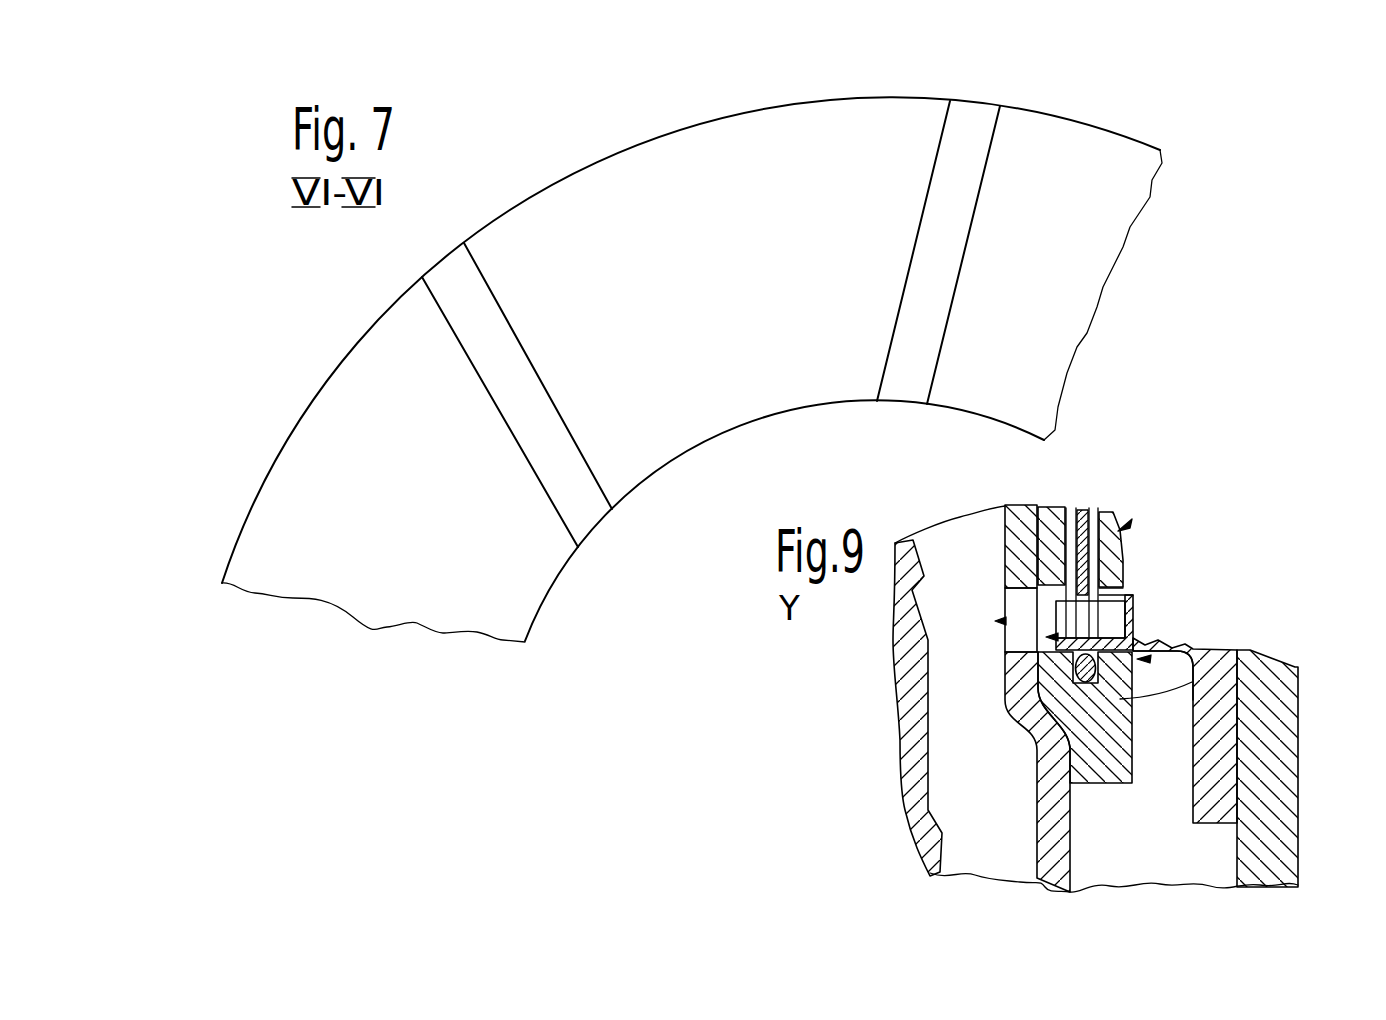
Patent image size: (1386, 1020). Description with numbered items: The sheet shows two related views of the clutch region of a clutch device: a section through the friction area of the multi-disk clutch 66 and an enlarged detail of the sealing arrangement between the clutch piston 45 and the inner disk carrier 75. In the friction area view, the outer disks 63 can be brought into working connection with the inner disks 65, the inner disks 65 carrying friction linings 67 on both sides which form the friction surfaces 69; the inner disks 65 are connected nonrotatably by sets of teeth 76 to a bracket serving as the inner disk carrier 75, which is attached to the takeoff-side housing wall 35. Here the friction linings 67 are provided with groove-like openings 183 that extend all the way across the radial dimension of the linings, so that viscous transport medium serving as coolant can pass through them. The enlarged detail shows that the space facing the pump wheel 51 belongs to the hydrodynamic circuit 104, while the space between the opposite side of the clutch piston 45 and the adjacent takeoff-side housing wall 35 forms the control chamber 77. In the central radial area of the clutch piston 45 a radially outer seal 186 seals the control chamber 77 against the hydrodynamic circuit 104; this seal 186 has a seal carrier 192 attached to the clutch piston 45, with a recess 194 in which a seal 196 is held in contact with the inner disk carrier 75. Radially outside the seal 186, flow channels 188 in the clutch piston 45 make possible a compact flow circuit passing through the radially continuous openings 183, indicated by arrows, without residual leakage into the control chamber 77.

In FIG. 7, the friction surfaces 69 is at (1090, 160).
In FIG. 7, the friction linings 67 is at (1118, 195).
In FIG. 9, the friction linings 67 is at (1072, 533).
In FIG. 7, the groove-like openings 183 is at (912, 370).
In FIG. 9, the groove-like openings 183 is at (1073, 510).
In FIG. 9, the flow channels 188 is at (1022, 608).
In FIG. 9, the outer disks 63 is at (1047, 533).
In FIG. 9, the inner disks 65 is at (1080, 513).
In FIG. 9, the multi-disk clutch 66 is at (1127, 525).
In FIG. 9, the sets of teeth 76 is at (1108, 617).
In FIG. 9, the seal 196 is at (1060, 637).
In FIG. 9, the radially outer seal 186 is at (1165, 640).
In FIG. 9, the recess 194 is at (1210, 643).
In FIG. 9, the inner disk carrier 75 is at (1220, 710).
In FIG. 9, the takeoff-side housing wall 35 is at (1283, 765).
In FIG. 9, the pump wheel 51 is at (910, 680).
In FIG. 9, the hydrodynamic circuit 104 is at (963, 762).
In FIG. 9, the clutch piston 45 is at (1047, 828).
In FIG. 9, the seal carrier 192 is at (1097, 765).
In FIG. 9, the control chamber 77 is at (1168, 847).